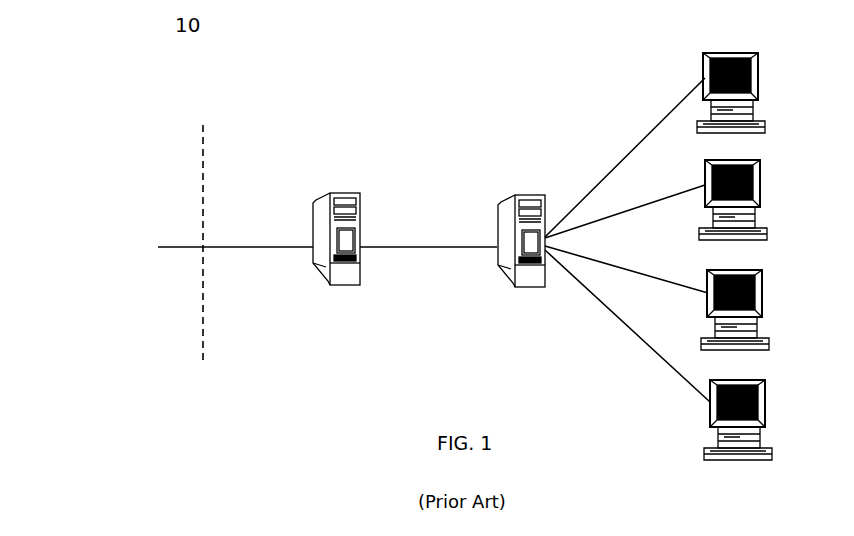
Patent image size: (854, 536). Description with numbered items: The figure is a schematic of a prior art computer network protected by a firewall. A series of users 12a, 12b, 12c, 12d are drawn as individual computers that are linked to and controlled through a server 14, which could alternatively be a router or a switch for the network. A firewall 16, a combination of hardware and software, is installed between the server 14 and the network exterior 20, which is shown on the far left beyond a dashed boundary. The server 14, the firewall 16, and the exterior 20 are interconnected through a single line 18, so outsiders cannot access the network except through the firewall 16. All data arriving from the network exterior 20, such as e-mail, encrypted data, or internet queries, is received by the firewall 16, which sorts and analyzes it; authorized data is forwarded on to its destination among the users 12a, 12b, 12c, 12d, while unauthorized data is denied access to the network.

The user 12a is at (758, 73).
The user 12b is at (758, 180).
The user 12c is at (760, 290).
The user 12d is at (762, 400).
The server 14 is at (518, 195).
The firewall 16 is at (333, 193).
The single line 18 is at (228, 246).
The network exterior 20 is at (87, 205).